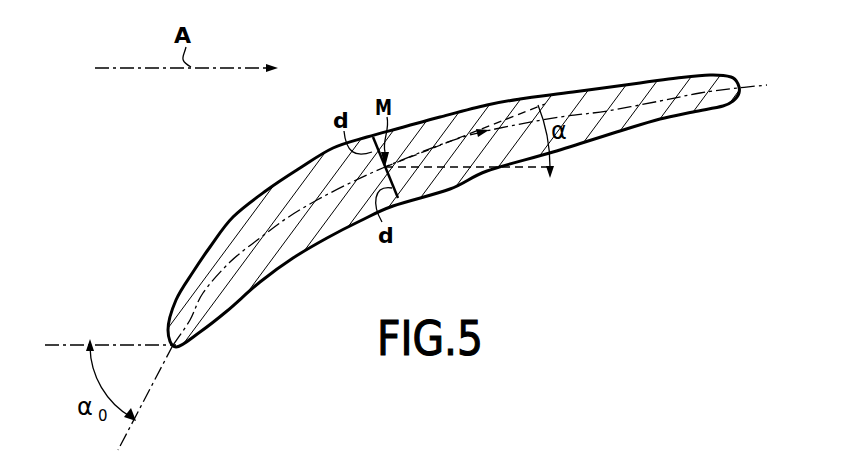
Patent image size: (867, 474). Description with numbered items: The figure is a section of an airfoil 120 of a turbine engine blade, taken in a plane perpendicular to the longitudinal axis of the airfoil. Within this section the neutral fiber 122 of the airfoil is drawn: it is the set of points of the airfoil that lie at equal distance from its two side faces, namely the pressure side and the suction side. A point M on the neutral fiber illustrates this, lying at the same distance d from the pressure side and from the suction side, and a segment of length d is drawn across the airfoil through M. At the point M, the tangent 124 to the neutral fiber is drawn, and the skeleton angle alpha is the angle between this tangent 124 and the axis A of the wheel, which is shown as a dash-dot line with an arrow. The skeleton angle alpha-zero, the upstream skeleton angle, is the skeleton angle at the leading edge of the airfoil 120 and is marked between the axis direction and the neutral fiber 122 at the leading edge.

The airfoil 120 is at (569, 82).
The neutral fiber 122 is at (622, 112).
The tangent to the neutral fiber 124 is at (438, 143).